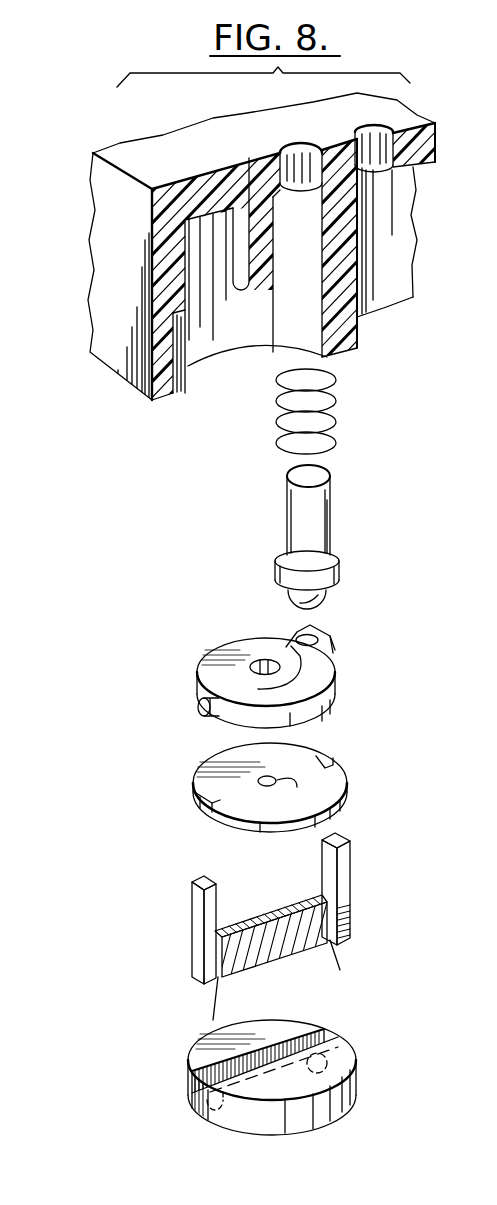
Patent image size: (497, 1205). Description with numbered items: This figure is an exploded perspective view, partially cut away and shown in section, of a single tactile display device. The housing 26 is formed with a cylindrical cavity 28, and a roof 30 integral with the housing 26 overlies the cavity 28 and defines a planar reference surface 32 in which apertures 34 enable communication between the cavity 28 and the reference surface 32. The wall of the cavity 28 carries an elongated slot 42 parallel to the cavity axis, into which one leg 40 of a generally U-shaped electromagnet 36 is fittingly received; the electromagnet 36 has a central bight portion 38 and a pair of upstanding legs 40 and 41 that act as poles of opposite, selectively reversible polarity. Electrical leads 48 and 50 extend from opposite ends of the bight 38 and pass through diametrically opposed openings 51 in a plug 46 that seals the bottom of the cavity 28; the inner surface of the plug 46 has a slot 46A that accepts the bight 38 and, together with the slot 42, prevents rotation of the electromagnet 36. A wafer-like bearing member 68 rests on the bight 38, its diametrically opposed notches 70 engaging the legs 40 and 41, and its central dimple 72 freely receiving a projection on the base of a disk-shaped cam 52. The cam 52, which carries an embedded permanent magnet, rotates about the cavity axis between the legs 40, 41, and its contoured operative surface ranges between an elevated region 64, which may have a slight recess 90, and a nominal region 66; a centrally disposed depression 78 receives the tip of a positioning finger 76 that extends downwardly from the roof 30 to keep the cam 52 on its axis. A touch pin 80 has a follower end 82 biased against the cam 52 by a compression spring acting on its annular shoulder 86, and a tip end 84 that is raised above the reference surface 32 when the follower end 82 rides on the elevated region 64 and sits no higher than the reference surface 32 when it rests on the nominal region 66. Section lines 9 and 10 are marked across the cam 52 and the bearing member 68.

The housing 26 is at (115, 202).
The cavity 28 is at (185, 278).
The roof 30 is at (213, 190).
The reference surface 32 is at (393, 120).
The aperture 34 is at (308, 158).
The electromagnet 36 is at (281, 926).
The bight portion 38 is at (278, 938).
The leg 40 is at (192, 902).
The leg 41 is at (343, 855).
The elongated slot 42 is at (182, 360).
The plug 46 is at (330, 1113).
The slot in inner surface of plug 46A is at (205, 1075).
The electrical lead 48 is at (212, 1000).
The electrical lead 50 is at (337, 956).
The opening 51 is at (330, 1063).
The cam 52 is at (200, 643).
The elevated region 64 is at (303, 623).
The nominal region 66 is at (200, 670).
The bearing member 68 is at (327, 786).
The notch 70 is at (200, 803).
The dimple 72 is at (290, 796).
The positioning finger 76 is at (265, 280).
The depression 78 is at (262, 662).
The touch pin 80 is at (315, 512).
The follower end 82 is at (327, 593).
The tip end 84 is at (305, 473).
The annular shoulder 86 is at (337, 395).
The recess 90 is at (318, 634).
The section line 9- 9 is at (330, 632).
The section line 10- 10 is at (400, 760).